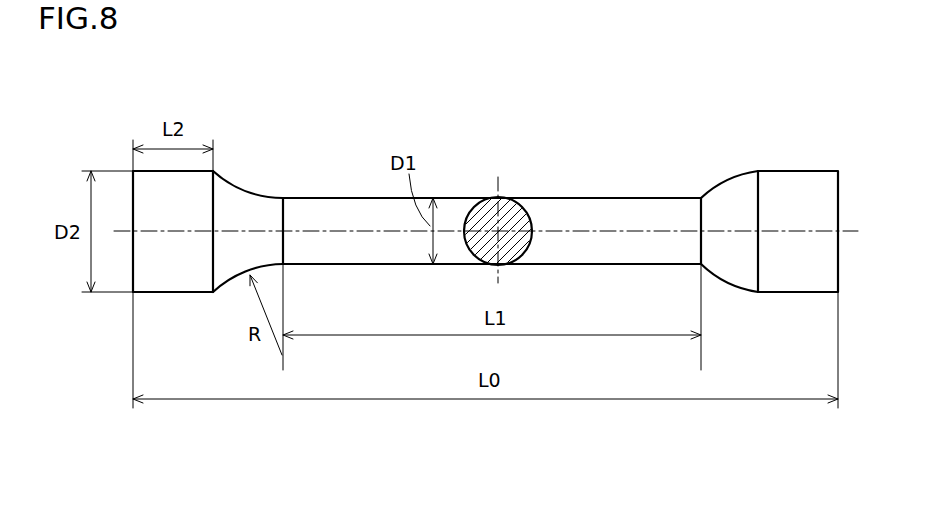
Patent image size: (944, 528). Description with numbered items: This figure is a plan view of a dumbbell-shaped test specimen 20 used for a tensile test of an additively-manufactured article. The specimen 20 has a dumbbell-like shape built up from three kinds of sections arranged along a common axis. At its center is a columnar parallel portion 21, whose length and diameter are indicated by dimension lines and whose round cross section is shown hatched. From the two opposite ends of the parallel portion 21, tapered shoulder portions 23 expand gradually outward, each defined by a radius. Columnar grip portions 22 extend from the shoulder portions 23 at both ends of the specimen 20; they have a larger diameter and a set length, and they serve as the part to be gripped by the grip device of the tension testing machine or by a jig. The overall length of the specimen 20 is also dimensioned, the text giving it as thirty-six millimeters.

The dumbbell-shaped test specimen 20 is at (797, 82).
The parallel portion 21 is at (567, 200).
The grip portion 22 is at (802, 178).
The shoulder portion 23 is at (725, 196).